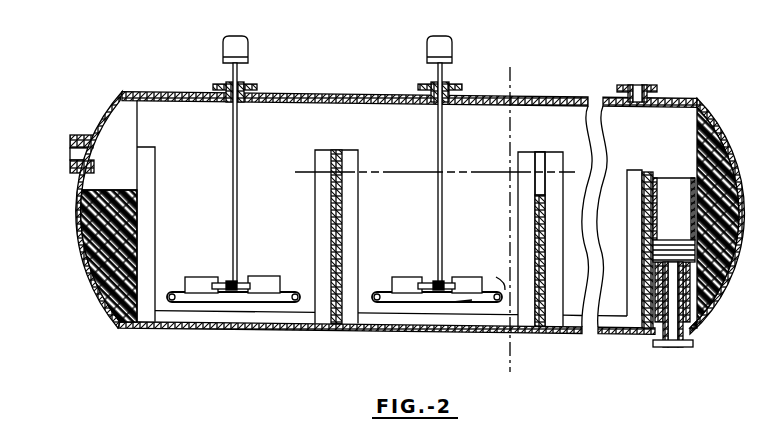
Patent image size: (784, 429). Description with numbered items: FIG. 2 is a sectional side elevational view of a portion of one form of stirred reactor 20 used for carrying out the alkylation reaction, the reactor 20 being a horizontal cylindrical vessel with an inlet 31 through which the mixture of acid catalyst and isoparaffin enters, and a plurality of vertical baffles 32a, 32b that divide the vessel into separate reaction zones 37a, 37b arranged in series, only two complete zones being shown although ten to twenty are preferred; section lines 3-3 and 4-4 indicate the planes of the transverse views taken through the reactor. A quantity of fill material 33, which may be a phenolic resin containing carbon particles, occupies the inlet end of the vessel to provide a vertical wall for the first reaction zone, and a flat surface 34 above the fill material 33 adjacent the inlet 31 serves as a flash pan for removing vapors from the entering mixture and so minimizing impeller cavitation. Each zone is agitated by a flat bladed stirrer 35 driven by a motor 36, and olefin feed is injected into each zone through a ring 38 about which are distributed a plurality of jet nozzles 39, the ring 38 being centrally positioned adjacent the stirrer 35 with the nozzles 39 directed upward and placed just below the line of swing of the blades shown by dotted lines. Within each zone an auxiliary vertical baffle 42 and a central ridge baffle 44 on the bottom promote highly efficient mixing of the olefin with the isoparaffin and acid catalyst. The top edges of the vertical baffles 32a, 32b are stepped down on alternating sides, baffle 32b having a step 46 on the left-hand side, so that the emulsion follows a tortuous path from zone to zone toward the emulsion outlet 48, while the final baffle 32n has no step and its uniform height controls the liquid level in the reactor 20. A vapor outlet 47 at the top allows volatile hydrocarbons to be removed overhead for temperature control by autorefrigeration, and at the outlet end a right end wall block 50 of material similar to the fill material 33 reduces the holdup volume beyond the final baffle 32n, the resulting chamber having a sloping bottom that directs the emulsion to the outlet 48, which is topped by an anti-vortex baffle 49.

The reactor 20 is at (300, 94).
The inlet 31 is at (72, 137).
The fill material 33 is at (84, 232).
The flat surface 34 is at (106, 190).
The flat bladed stirrer 35 is at (233, 213).
The motor 36 is at (223, 50).
The reaction zone 37a is at (173, 248).
The reaction zone 37b is at (408, 248).
The ring 38 is at (289, 292).
The jet nozzles 39 is at (171, 292).
The auxiliary vertical baffle 42 is at (155, 186).
The central ridge baffle 44 is at (213, 314).
The step 46 is at (536, 196).
The vapor outlet 47 is at (648, 87).
The emulsion outlet 48 is at (655, 345).
The anti-vortex baffle 49 is at (664, 240).
The right end wall block 50 is at (695, 132).
The vertical baffle 32a is at (332, 233).
The vertical baffle 32b is at (534, 234).
The final baffle 32n is at (652, 168).
The section line 3- 3 is at (295, 166).
The section line 4- 4 is at (517, 70).